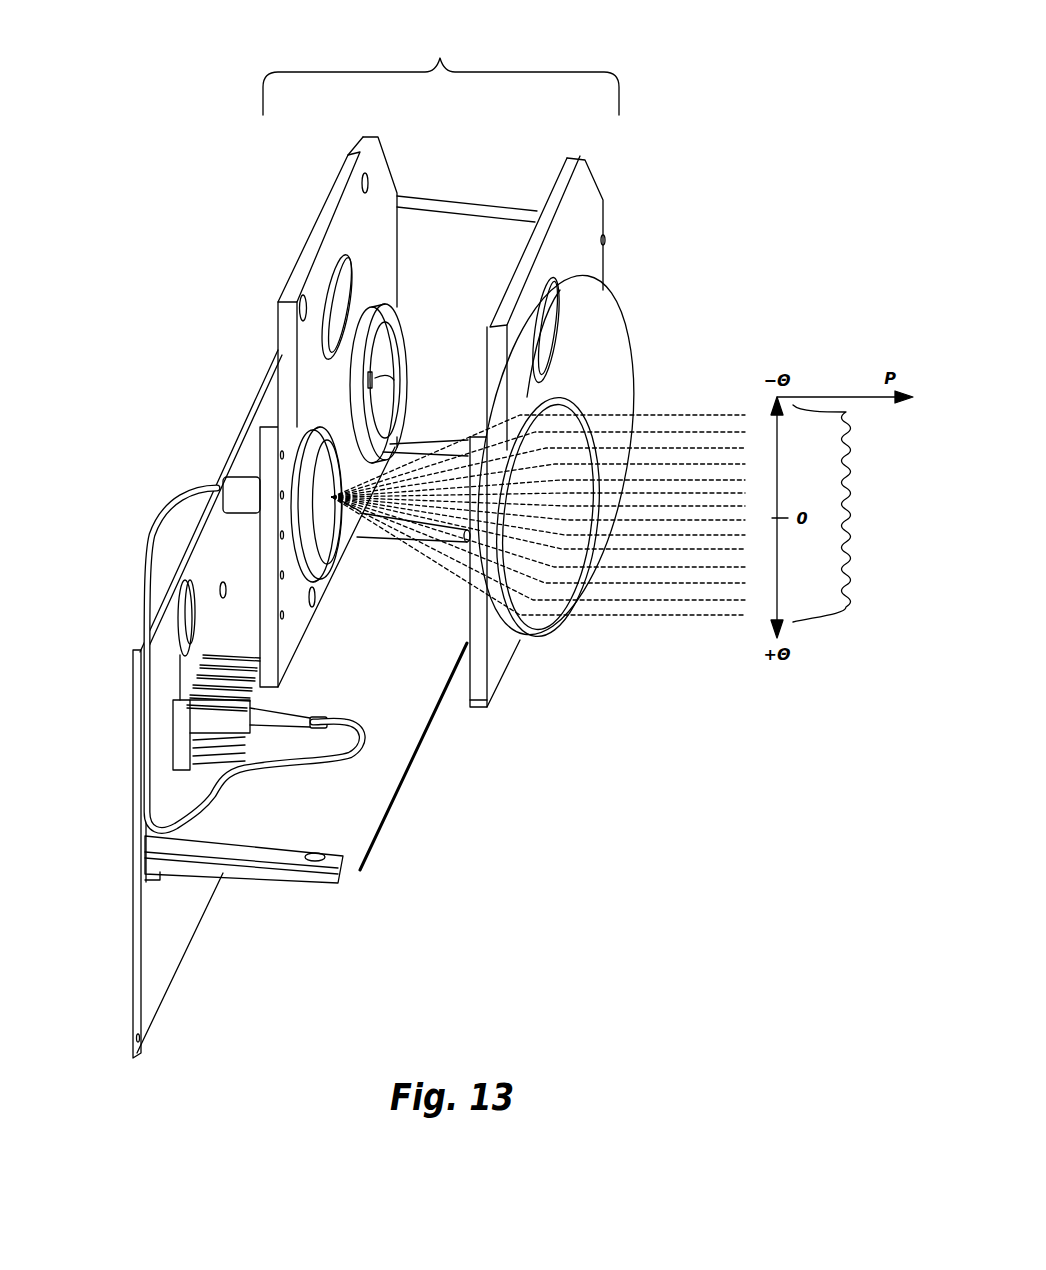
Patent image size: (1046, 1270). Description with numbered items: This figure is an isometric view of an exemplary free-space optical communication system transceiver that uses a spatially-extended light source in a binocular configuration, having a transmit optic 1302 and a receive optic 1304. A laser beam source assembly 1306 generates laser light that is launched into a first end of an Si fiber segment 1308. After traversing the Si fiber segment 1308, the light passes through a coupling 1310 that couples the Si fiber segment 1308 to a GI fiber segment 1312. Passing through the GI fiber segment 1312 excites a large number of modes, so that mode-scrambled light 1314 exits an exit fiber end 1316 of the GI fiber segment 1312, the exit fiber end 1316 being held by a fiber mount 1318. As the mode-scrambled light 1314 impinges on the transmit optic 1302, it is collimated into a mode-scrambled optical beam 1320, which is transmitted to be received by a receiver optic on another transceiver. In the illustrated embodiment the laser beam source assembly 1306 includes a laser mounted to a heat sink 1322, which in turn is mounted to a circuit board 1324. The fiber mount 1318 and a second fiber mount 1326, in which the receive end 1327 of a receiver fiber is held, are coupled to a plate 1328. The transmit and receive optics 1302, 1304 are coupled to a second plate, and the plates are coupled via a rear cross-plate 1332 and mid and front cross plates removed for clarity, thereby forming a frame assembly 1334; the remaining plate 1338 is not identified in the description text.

The transmit optic 1302 is at (520, 622).
The receive optic 1304 is at (627, 360).
The laser beam source assembly 1306 is at (290, 693).
The Si fiber segment 1308 is at (363, 750).
The coupling 1310 is at (215, 797).
The GI fiber segment 1312 is at (148, 700).
The mode-scrambled light 1314 is at (440, 590).
The exit fiber end 1316 is at (330, 577).
The fiber mount 1318 is at (317, 433).
The mode-scrambled optical beam 1320 is at (672, 635).
The heat sink 1322 is at (182, 725).
The circuit board 1324 is at (137, 792).
The fiber mount 1326 is at (397, 320).
The receive end 1327 is at (368, 380).
The plate 1328 is at (333, 205).
The rear cross-plate 1332 is at (430, 202).
The frame assembly 1334 is at (441, 68).
The second mounting plate 1338 is at (587, 223).